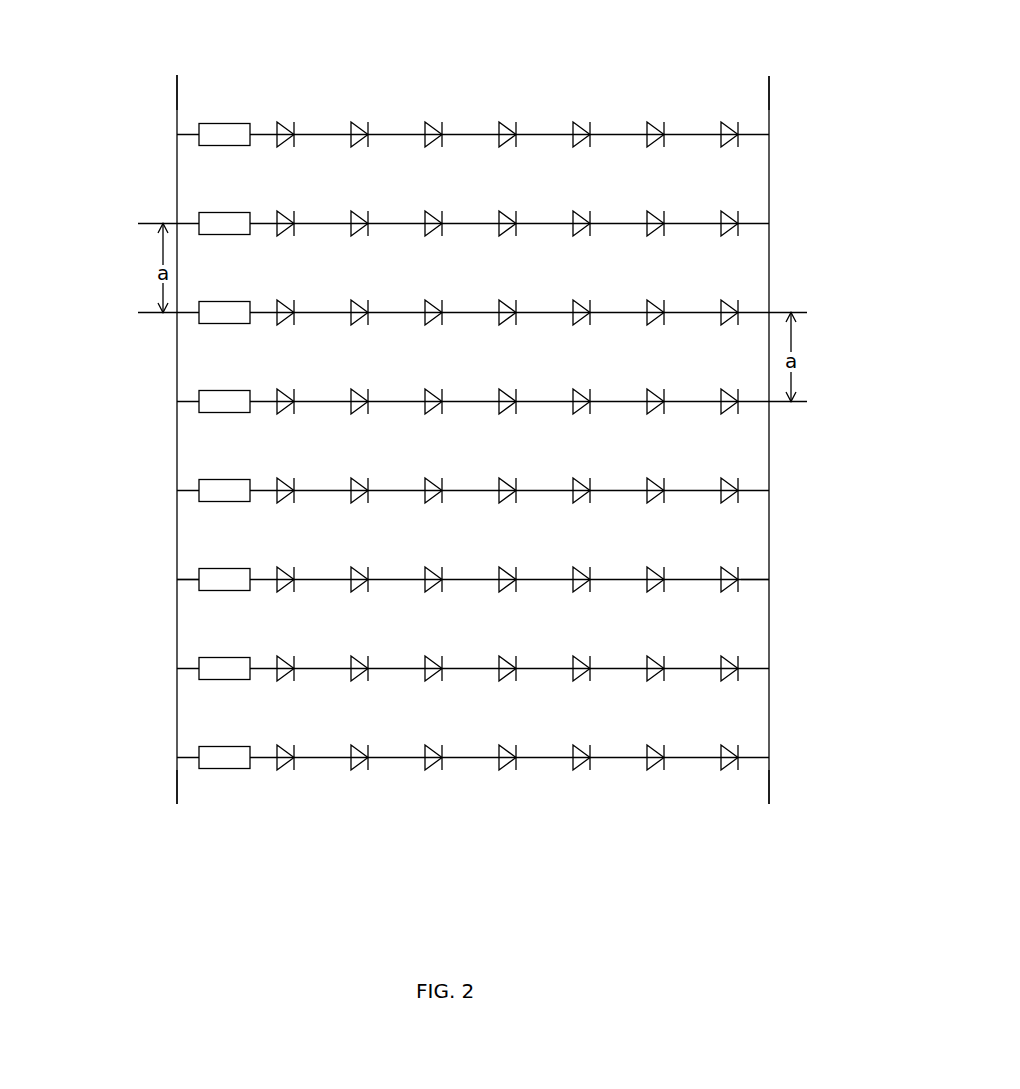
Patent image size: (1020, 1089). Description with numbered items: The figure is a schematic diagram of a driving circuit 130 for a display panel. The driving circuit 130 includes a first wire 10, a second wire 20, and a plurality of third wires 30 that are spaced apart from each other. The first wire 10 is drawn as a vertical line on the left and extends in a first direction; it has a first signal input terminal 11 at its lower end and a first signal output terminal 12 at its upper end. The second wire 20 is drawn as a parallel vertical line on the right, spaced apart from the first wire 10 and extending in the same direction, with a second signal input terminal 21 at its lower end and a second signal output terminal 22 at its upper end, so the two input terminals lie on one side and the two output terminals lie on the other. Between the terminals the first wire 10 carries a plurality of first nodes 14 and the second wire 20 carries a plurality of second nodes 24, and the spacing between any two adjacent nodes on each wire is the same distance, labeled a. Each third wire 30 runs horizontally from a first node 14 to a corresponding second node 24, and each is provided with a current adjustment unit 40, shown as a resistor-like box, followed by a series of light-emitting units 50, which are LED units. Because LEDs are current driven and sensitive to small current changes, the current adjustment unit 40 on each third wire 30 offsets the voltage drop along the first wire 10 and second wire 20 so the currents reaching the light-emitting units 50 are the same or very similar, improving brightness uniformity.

The first wire 10 is at (177, 520).
The first signal input terminal 11 is at (177, 804).
The first signal output terminal 12 is at (177, 75).
The first node 14 is at (177, 578).
The second wire 20 is at (769, 535).
The second signal input terminal 21 is at (769, 804).
The second signal output terminal 22 is at (769, 76).
The second node 24 is at (769, 580).
The third wire 30 is at (405, 135).
The current adjustment unit 40 is at (220, 767).
The light-emitting unit 50 is at (433, 768).
The driving circuit 130 is at (473, 464).